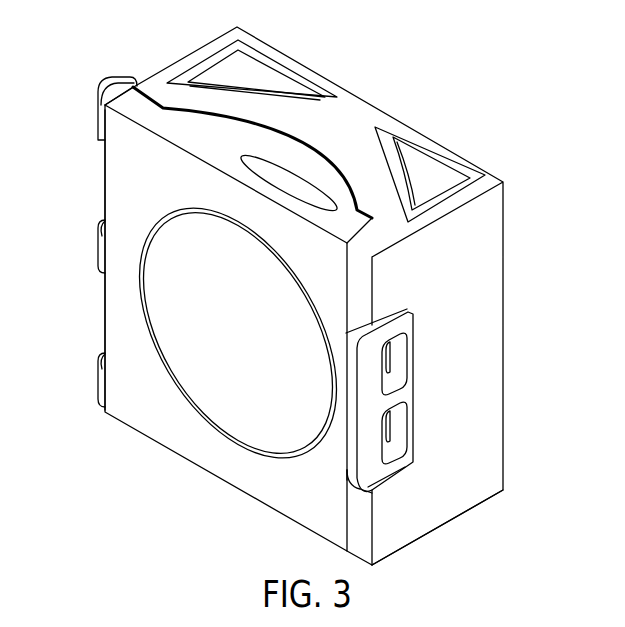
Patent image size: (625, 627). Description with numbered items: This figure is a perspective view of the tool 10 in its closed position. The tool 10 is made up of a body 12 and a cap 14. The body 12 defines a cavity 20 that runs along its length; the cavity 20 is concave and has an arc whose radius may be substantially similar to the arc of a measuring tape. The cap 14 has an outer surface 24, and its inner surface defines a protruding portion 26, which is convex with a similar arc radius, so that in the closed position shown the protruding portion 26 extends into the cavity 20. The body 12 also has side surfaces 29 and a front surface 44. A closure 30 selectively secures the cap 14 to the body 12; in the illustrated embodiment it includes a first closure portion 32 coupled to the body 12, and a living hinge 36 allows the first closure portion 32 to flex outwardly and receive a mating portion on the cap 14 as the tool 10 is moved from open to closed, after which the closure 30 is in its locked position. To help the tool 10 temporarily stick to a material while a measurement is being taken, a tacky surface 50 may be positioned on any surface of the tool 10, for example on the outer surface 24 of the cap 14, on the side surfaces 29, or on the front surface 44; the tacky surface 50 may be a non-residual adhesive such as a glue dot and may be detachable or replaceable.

The tool 10 is at (491, 95).
The body 12 is at (532, 351).
The cap 14 is at (82, 174).
The cavity 20 is at (320, 148).
The outer surface 24 is at (120, 302).
The protruding portion 26 is at (268, 140).
The side surfaces 29 is at (483, 486).
The closure 30 is at (406, 503).
The first closure portion 32 is at (367, 478).
The living hinge 36 is at (413, 333).
The front surface 44 is at (262, 98).
The tacky surface 50 is at (228, 70).